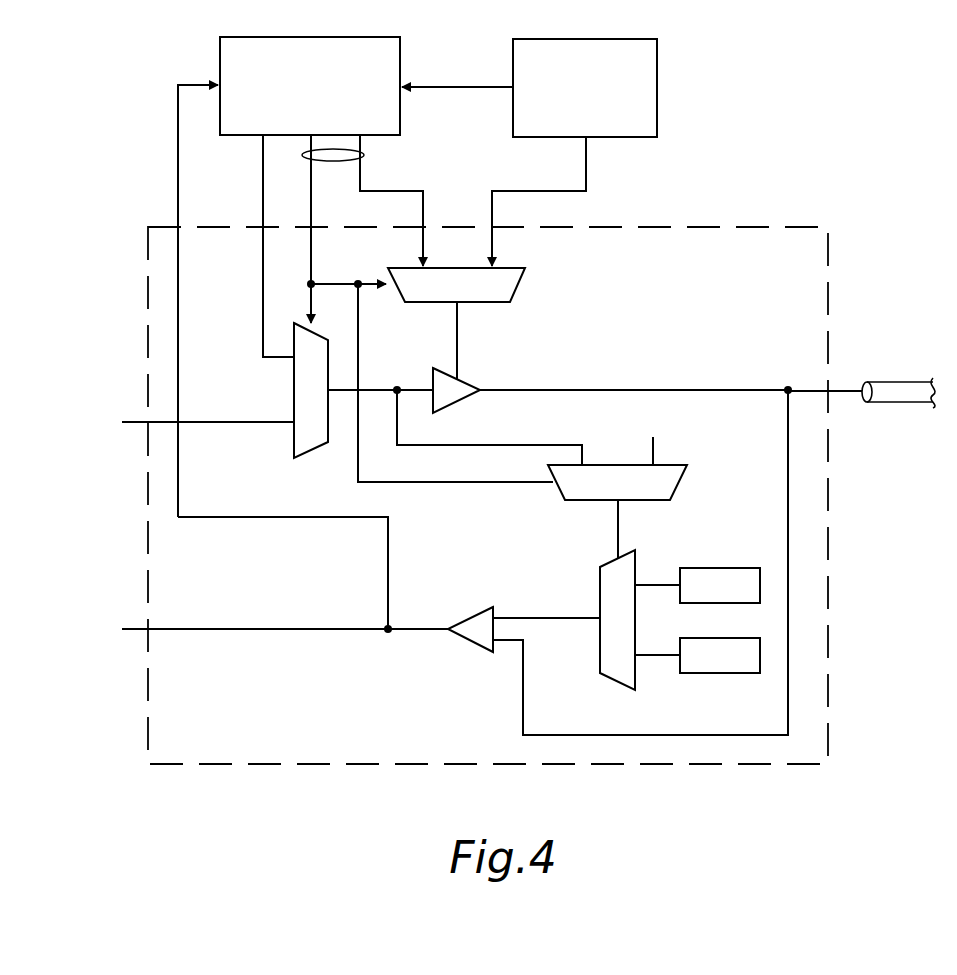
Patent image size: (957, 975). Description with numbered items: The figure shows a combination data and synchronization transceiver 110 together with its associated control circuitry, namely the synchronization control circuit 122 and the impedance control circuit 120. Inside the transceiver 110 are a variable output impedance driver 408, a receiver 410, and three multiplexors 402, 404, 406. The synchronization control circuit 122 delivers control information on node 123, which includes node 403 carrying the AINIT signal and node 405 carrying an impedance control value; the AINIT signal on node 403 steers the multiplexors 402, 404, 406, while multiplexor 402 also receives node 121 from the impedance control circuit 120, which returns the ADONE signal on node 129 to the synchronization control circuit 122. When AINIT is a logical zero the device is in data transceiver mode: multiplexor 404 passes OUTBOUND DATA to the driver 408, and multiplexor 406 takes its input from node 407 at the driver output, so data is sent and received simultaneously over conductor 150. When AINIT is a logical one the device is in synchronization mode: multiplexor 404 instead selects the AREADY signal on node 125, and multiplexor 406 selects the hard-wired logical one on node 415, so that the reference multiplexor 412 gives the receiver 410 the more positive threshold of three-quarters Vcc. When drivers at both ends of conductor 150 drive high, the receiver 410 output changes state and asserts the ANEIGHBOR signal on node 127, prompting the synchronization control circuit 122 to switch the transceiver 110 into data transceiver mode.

The combination data and synchronization transceiver 110 is at (812, 232).
The impedance control circuit 120 is at (640, 39).
The node 121 is at (586, 182).
The synchronization control circuit 122 is at (385, 37).
The node 123 is at (364, 155).
The node 125 is at (262, 196).
The node 127 is at (177, 142).
The node 129 is at (455, 92).
The conductor 150 is at (888, 381).
The multiplexor 402 is at (522, 283).
The node 403 is at (358, 327).
The multiplexor 404 is at (312, 455).
The node 405 is at (423, 205).
The multiplexor 406 is at (680, 478).
The node 407 is at (397, 386).
The driver 408 is at (467, 380).
The receiver 410 is at (465, 645).
The reference voltage multiplexer 412 is at (617, 683).
The node 415 is at (653, 452).